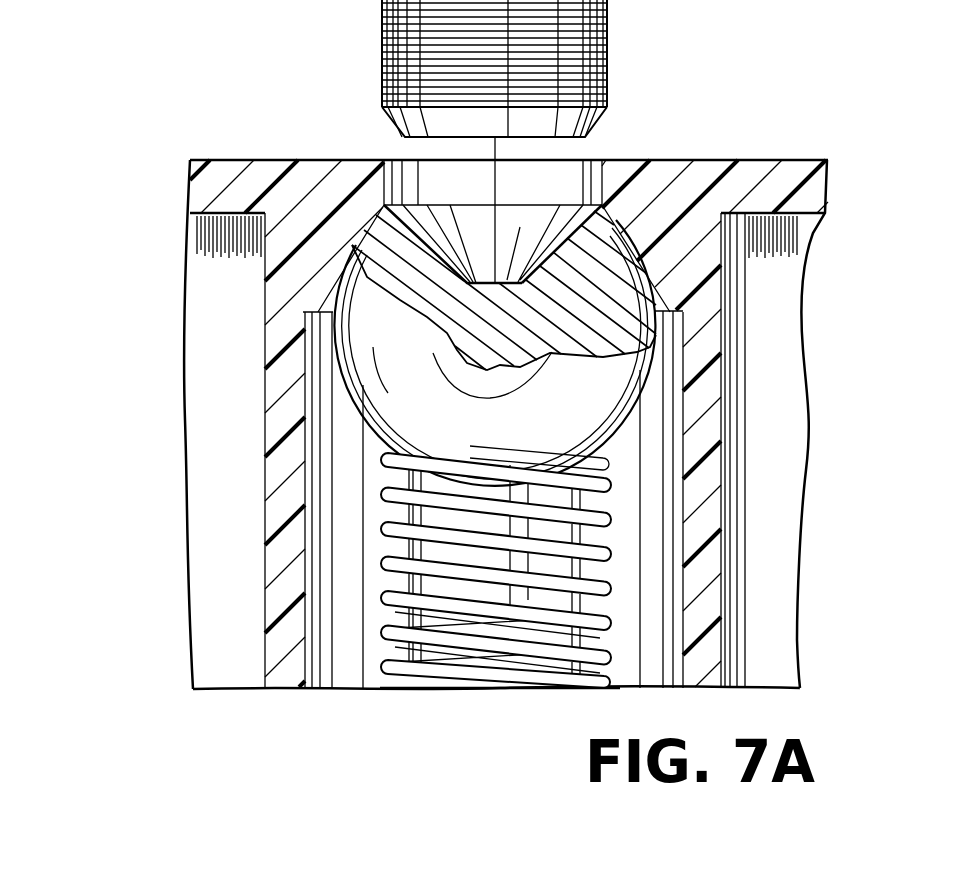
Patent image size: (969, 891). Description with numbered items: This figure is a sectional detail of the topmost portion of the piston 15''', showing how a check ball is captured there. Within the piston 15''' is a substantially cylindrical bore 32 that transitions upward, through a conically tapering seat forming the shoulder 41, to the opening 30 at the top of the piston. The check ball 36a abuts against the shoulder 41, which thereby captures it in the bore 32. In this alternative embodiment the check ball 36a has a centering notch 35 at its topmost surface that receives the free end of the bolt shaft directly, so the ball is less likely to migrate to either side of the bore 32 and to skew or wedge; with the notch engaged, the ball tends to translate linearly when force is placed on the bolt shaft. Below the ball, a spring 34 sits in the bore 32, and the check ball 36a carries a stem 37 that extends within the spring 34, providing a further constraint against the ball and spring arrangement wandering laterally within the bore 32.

The piston 15''' is at (529, 369).
The opening 30 is at (433, 185).
The shoulder 41 is at (350, 305).
The centering notch 35 is at (563, 242).
The bore 32 is at (637, 537).
The check ball 36a is at (410, 398).
The stem 37 is at (450, 523).
The spring 34 is at (445, 672).